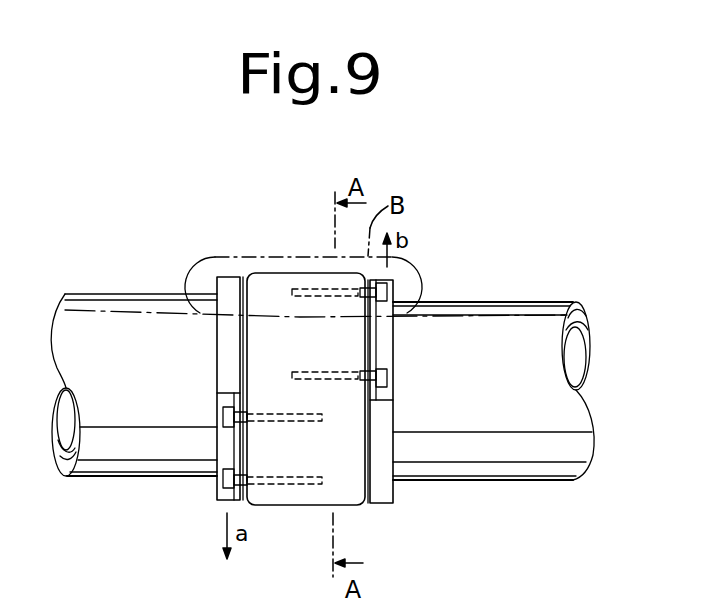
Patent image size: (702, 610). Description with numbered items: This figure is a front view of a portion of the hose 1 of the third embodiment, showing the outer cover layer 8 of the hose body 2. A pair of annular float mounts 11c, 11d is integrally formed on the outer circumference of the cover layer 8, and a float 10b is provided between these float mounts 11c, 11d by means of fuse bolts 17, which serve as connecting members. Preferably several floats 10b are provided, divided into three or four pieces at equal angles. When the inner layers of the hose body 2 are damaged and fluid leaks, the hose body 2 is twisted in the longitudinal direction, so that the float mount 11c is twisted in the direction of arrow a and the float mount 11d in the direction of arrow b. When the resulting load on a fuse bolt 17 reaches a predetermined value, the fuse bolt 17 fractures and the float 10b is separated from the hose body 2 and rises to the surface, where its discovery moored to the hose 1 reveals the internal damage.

The hose 1 is at (441, 231).
The hose body 2 is at (538, 301).
The cover layer 8 is at (127, 300).
The float 10b is at (295, 272).
The float mount 11c is at (228, 287).
The float mount 11d is at (385, 492).
The fuse bolt 17 is at (393, 291).